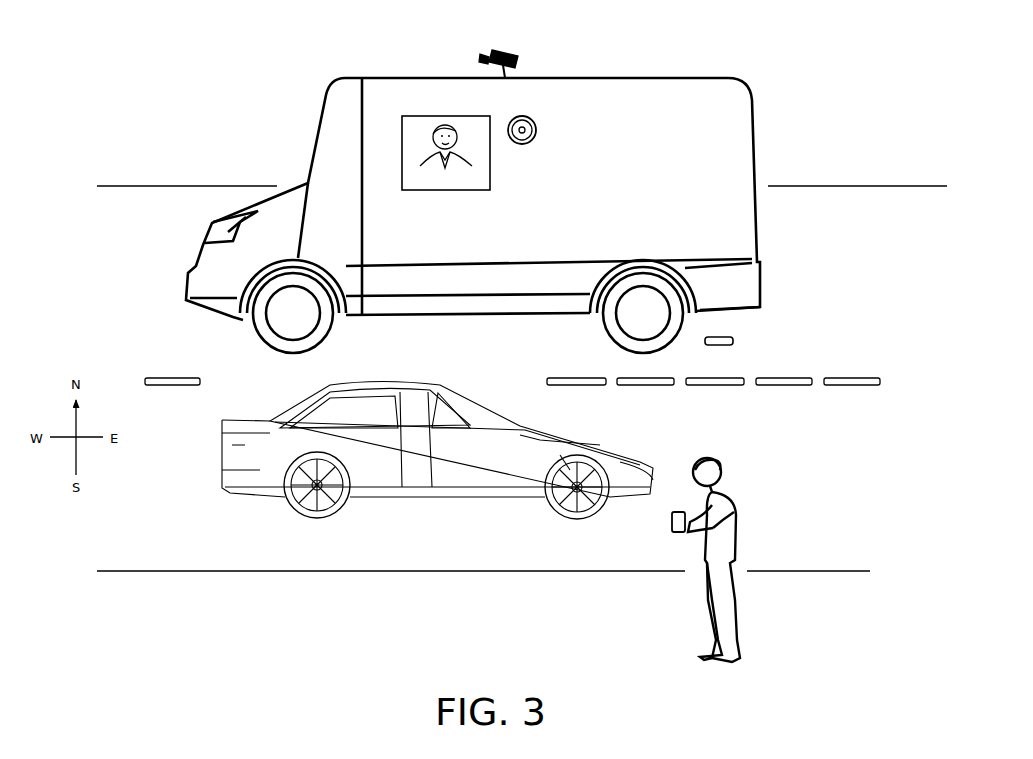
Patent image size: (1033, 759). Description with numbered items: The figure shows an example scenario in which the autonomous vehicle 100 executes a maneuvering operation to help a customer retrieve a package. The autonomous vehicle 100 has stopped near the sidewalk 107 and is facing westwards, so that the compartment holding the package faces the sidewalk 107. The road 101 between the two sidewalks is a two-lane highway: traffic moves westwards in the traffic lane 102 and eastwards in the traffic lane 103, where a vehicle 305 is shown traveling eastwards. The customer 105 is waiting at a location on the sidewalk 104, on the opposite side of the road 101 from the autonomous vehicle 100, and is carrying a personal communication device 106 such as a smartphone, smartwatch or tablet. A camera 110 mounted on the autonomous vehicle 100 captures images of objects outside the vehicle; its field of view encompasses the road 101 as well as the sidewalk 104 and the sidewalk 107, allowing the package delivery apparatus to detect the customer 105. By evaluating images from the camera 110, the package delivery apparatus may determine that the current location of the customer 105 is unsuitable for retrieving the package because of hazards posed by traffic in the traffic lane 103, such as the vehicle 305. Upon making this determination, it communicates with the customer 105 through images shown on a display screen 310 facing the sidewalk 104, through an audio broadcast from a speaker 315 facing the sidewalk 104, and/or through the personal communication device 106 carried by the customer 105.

The autonomous vehicle 100 is at (278, 144).
The road 101 is at (780, 186).
The traffic lane 102 is at (877, 283).
The traffic lane 103 is at (882, 468).
The sidewalk 104 is at (869, 598).
The customer 105 is at (718, 560).
The personal communication device 106 is at (678, 528).
The sidewalk 107 is at (887, 159).
The camera 110 is at (524, 47).
The vehicle 305 is at (201, 503).
The display screen 310 is at (489, 142).
The speaker 315 is at (528, 145).